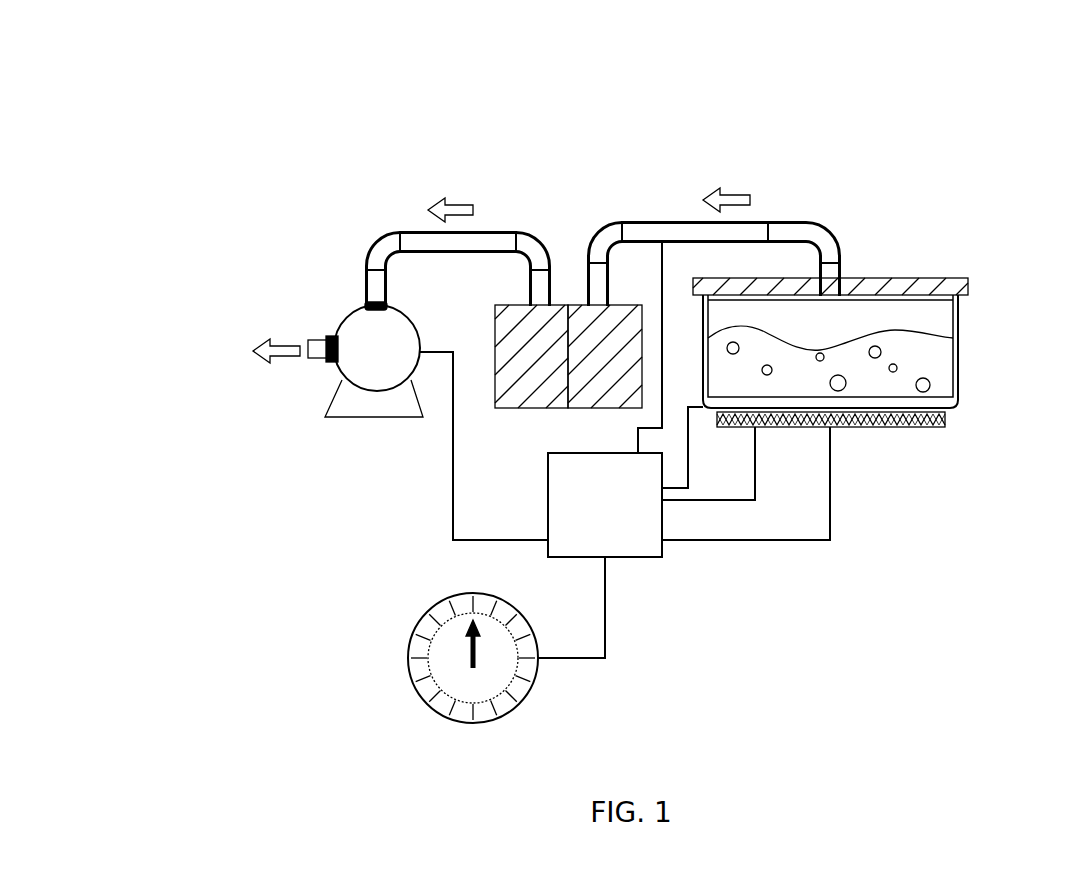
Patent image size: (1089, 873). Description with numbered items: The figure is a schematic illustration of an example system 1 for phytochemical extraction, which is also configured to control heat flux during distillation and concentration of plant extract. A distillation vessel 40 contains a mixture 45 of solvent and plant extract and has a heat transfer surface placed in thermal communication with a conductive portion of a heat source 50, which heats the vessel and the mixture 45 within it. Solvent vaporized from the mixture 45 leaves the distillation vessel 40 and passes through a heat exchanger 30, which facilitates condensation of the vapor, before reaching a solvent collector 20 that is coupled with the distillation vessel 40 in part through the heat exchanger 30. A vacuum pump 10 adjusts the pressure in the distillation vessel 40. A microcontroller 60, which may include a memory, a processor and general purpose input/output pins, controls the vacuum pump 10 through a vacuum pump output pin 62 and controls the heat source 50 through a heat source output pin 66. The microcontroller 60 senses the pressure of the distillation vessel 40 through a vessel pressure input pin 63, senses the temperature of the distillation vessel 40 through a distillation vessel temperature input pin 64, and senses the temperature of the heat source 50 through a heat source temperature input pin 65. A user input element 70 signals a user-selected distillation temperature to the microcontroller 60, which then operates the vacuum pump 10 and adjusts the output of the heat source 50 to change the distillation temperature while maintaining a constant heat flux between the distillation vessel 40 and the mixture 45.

The system 1 is at (168, 138).
The vacuum pump 10 is at (364, 348).
The solvent collector 20 is at (535, 350).
The heat exchanger 30 is at (605, 362).
The distillation vessel 40 is at (961, 331).
The mixture 45 is at (913, 362).
The heat source 50 is at (946, 425).
The microcontroller 60 is at (618, 565).
The vacuum pump output pin 62 is at (451, 522).
The vessel pressure input pin 63 is at (665, 269).
The distillation vessel temperature input pin 64 is at (690, 472).
The heat source temperature input pin 65 is at (758, 477).
The heat source output pin 66 is at (802, 544).
The user input element 70 is at (506, 661).